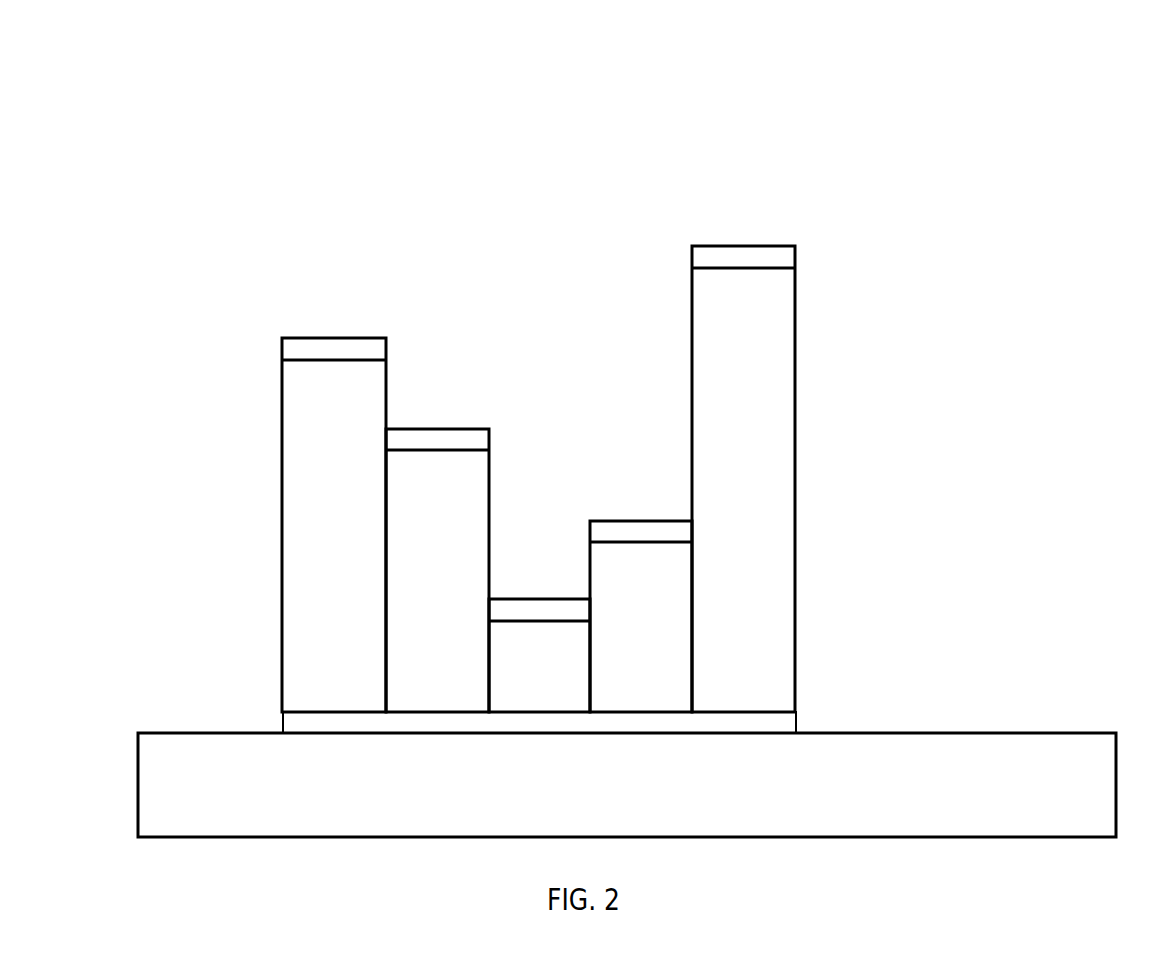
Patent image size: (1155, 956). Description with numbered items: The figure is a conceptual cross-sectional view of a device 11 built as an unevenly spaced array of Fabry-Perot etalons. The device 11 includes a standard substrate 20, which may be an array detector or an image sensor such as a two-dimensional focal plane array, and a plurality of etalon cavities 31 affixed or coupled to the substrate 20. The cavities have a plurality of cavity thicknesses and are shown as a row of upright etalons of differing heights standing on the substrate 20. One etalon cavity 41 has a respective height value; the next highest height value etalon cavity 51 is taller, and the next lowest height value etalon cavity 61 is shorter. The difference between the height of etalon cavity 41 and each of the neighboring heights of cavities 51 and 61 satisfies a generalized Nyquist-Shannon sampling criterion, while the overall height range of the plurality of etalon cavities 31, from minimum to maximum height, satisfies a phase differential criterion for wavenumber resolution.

The device 11 is at (583, 386).
The substrate 20 is at (1013, 745).
The plurality of etalon cavities 31 is at (559, 376).
The etalon cavity 41 is at (307, 448).
The next highest height value etalon cavity 51 is at (871, 421).
The next lowest height value etalon cavity 61 is at (420, 585).